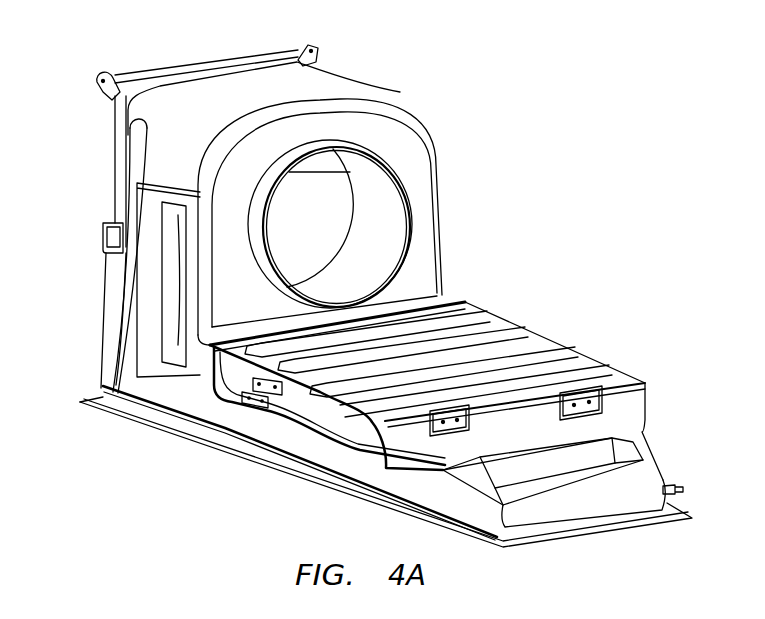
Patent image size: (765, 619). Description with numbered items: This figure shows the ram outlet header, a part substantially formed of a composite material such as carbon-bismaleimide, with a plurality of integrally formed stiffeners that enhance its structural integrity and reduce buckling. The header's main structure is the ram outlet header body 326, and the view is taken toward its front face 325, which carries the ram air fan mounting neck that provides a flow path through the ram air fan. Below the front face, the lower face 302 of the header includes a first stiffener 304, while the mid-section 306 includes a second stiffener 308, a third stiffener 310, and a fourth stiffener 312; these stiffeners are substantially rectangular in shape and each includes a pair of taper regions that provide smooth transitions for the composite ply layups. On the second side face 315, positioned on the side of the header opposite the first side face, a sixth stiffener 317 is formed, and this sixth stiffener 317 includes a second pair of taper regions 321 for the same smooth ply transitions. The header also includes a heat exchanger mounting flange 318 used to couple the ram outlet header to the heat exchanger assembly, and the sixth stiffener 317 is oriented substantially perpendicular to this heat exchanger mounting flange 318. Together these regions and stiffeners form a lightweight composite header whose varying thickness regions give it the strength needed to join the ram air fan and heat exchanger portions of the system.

The lower face 302 is at (583, 488).
The first stiffener 304 is at (555, 460).
The mid-section 306 is at (247, 403).
The second stiffener 308 is at (543, 355).
The third stiffener 310 is at (480, 345).
The fourth stiffener 312 is at (437, 318).
The second side face 315 is at (133, 337).
The sixth stiffener 317 is at (140, 290).
The heat exchanger mounting flange 318 is at (253, 463).
The second pair of taper regions 321 is at (170, 228).
The front face 325 is at (385, 125).
The ram outlet header body 326 is at (255, 96).